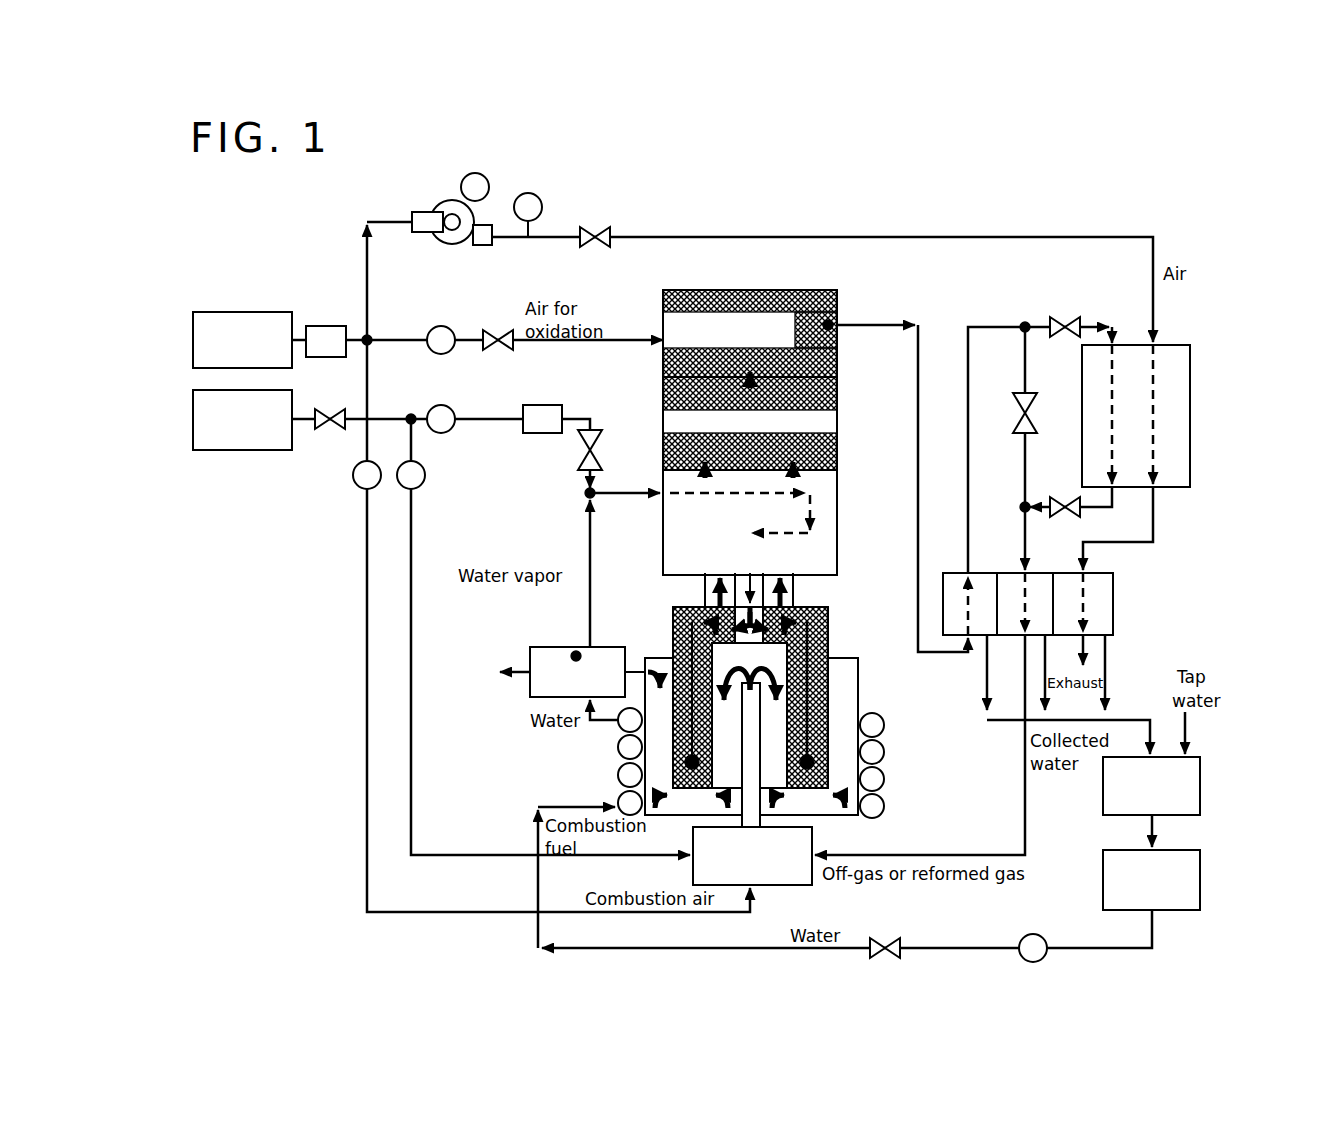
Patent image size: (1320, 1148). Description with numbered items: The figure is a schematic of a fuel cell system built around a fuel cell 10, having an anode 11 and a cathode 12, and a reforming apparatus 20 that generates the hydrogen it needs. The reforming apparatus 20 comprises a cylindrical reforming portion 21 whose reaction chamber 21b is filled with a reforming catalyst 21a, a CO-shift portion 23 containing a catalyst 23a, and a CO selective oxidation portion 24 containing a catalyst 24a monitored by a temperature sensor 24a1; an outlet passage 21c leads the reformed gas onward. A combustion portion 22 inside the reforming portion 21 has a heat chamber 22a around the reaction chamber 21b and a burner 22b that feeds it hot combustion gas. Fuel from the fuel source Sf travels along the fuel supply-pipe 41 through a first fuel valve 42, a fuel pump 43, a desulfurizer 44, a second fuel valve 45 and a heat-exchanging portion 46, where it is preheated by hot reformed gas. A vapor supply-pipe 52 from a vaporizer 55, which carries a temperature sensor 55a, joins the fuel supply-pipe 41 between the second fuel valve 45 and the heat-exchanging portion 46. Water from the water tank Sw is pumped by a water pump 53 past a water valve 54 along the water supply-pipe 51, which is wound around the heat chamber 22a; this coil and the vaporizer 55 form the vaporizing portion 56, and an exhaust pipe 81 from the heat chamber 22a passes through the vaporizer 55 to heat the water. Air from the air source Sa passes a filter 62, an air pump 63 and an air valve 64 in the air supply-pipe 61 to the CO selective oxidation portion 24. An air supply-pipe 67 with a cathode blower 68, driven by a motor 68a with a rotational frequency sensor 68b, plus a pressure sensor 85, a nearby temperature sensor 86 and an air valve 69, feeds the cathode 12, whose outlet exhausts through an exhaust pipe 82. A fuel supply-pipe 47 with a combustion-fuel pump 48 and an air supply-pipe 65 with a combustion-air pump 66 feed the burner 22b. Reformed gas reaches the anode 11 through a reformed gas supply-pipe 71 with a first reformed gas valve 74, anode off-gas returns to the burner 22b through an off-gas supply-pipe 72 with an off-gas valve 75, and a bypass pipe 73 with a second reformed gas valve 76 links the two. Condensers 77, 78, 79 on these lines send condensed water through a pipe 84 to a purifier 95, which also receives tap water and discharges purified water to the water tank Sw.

The fuel cell 10 is at (1131, 345).
The anode 11 is at (1112, 378).
The cathode 12 is at (1153, 408).
The reforming apparatus 20 is at (753, 414).
The reforming portion 21 is at (795, 700).
The reforming catalyst 21a is at (808, 690).
The reaction chamber 21b is at (828, 665).
The reformed gas outlet passage 21c is at (793, 598).
The combustion portion 22 is at (826, 828).
The heat chamber 22a is at (655, 658).
The burner 22b is at (693, 862).
The CO-shift portion 23 is at (837, 425).
The catalyst 23a is at (837, 400).
The CO selective oxidation portion 24 is at (663, 306).
The catalyst 24a is at (837, 362).
The temperature sensor 24a1 is at (837, 300).
The fuel supply-pipe 41 is at (386, 412).
The first fuel valve 42 is at (333, 409).
The fuel pump 43 is at (442, 405).
The desulfurizer 44 is at (544, 405).
The second fuel valve 45 is at (600, 446).
The heat-exchanging portion 46 is at (837, 497).
The fuel supply-pipe 47 is at (412, 628).
The combustion-fuel pump 48 is at (425, 472).
The water supply-pipe 51 is at (947, 948).
The vapor supply-pipe 52 is at (590, 545).
The water pump 53 is at (1033, 934).
The water valve 54 is at (887, 938).
The vaporizer 55 is at (612, 647).
The temperature sensor 55a is at (576, 650).
The vaporizing portion 56 is at (570, 762).
The air supply-pipe 61 is at (384, 344).
The filter 62 is at (327, 326).
The air pump 63 is at (441, 326).
The air valve 64 is at (500, 330).
The air supply-pipe 65 is at (366, 626).
The combustion-air pump 66 is at (353, 474).
The air supply-pipe 67 is at (696, 237).
The cathode blower 68 is at (450, 200).
The motor 68a is at (455, 248).
The rotational frequency sensor 68b is at (426, 212).
The air valve 69 is at (597, 227).
The reformed gas supply-pipe 71 is at (918, 452).
The off-gas supply-pipe 72 is at (1025, 835).
The bypass pipe 73 is at (1025, 468).
The first reformed gas valve 74 is at (1067, 317).
The off-gas valve 75 is at (1066, 497).
The second reformed gas valve 76 is at (1018, 404).
The condenser 77 is at (982, 573).
The condenser 78 is at (1040, 573).
The condenser 79 is at (1100, 575).
The exhaust pipe 81 is at (528, 660).
The exhaust pipe 82 is at (1153, 514).
The pipe 84 is at (1118, 720).
The pressure sensor 85 is at (527, 193).
The temperature sensor 86 is at (474, 173).
The purifier 95 is at (1200, 790).
The air source Sa is at (242, 312).
The fuel source Sf is at (243, 390).
The water tank Sw is at (1200, 877).